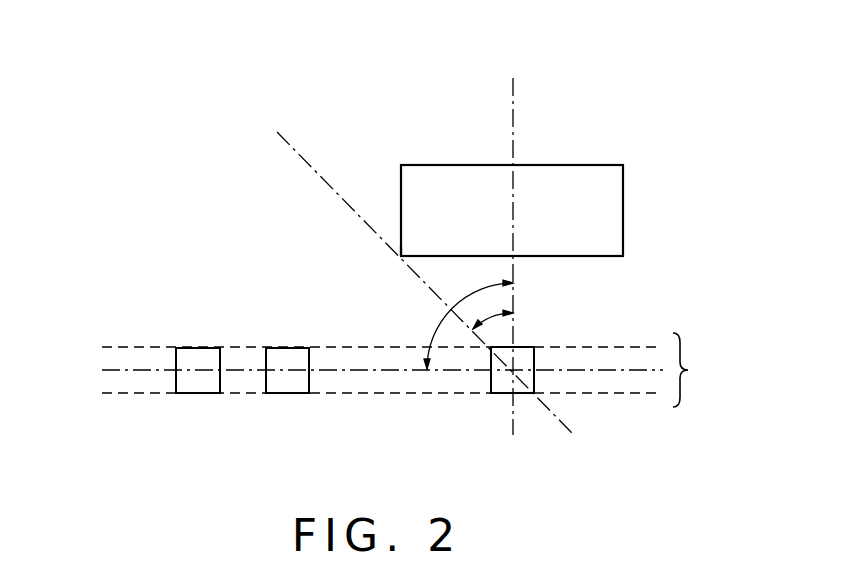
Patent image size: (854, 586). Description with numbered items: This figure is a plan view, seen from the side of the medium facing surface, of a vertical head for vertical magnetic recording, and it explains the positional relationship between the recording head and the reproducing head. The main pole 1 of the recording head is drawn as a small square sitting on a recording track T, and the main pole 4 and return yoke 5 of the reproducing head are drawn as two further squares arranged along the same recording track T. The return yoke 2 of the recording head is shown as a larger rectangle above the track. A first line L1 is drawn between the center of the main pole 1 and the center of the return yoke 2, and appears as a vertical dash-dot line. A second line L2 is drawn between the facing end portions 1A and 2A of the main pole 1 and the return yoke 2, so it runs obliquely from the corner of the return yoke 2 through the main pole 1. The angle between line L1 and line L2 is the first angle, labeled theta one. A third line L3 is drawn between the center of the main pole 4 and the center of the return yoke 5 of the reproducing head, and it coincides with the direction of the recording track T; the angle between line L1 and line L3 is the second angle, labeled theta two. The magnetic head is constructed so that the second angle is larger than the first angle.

The main pole of the recording head 1 is at (503, 384).
The facing end portion of the main pole 1A is at (485, 352).
The return yoke 2 is at (617, 213).
The facing end portion of the return yoke 2A is at (395, 258).
The main pole of the reproducing head 4 is at (292, 385).
The return yoke of the reproducing head 5 is at (203, 385).
The line between centers of main pole and return yoke of the recording head L1 is at (511, 239).
The line between facing end portions of main pole and return yoke L2 is at (404, 267).
The line between centers of main pole and return yoke of the reproducing head L3 is at (357, 371).
The recording track T is at (409, 370).